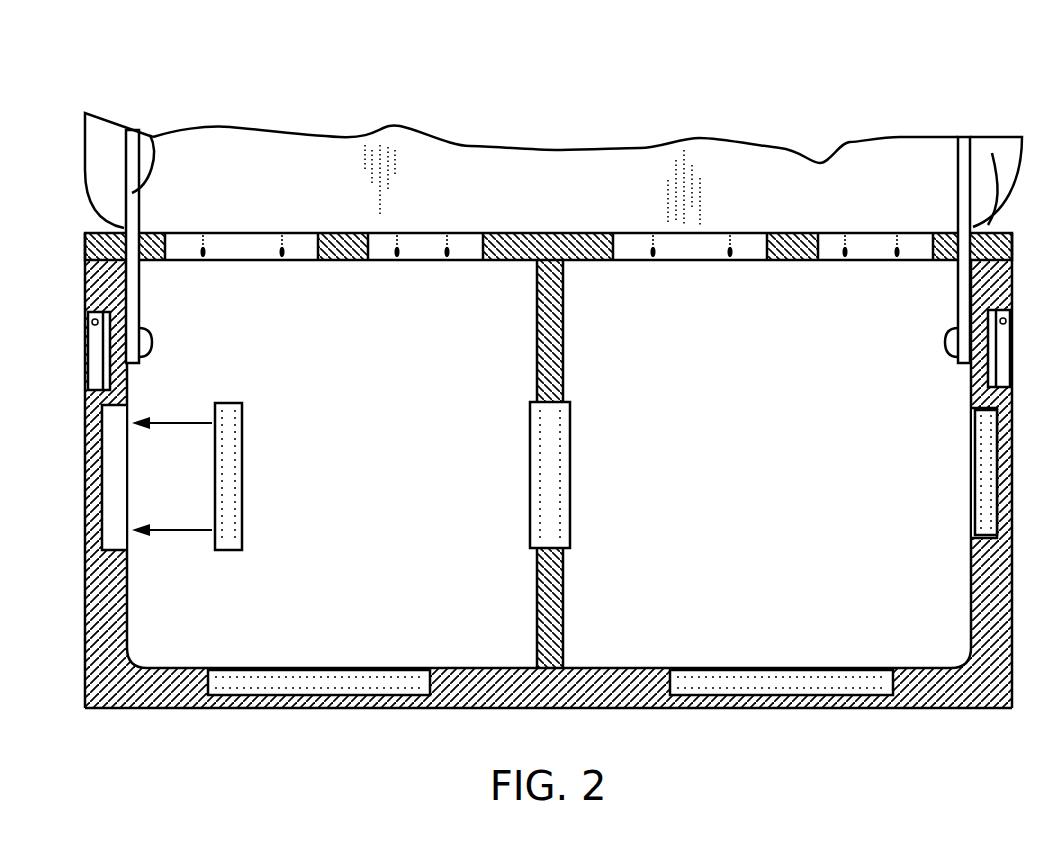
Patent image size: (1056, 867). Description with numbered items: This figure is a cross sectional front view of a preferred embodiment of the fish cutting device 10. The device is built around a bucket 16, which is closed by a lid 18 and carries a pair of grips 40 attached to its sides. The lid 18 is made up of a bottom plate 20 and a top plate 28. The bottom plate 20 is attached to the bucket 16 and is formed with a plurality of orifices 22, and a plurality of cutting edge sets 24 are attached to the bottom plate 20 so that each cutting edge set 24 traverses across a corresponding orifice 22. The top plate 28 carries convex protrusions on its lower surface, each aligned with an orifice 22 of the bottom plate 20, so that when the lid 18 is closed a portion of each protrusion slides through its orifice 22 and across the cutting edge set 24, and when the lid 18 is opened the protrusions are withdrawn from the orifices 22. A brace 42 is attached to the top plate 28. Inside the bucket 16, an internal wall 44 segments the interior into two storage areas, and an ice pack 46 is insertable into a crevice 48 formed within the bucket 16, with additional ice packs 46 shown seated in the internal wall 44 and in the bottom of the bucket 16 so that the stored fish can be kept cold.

The fish cutting device 10 is at (176, 735).
The bucket 16 is at (1013, 675).
The lid 18 is at (105, 193).
The bottom plate 20 is at (1020, 137).
The orifices 22 is at (247, 250).
The cutting edge set 24 is at (282, 250).
The top plate 28 is at (992, 153).
The grips 40 is at (88, 343).
The brace 42 is at (153, 140).
The internal wall 44 is at (563, 338).
The ice pack 46 is at (233, 487).
The crevice 48 is at (108, 518).